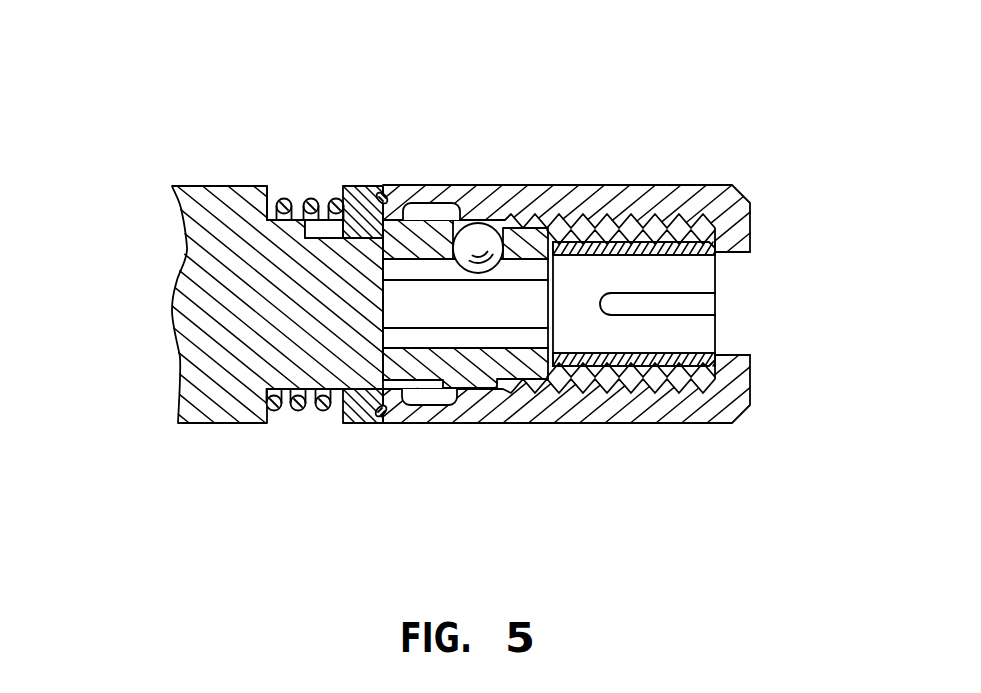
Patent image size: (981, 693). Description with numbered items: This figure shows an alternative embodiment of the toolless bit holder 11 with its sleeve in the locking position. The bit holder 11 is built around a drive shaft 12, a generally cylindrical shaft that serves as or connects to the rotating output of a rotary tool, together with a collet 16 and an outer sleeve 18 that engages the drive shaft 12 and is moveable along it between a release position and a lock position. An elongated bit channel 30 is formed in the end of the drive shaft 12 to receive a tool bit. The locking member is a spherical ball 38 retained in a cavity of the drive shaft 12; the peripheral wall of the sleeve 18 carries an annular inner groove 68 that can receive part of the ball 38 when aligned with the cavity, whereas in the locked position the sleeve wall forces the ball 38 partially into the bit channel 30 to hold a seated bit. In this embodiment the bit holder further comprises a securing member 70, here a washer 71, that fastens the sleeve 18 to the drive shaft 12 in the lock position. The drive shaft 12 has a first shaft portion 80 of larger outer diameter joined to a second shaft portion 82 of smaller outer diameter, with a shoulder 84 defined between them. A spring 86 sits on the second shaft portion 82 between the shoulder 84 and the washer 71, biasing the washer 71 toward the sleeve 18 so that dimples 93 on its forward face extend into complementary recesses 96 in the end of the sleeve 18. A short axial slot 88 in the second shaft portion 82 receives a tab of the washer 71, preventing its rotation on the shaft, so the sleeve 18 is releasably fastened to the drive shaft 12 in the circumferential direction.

The bit holder 11 is at (158, 136).
The drive shaft 12 is at (233, 253).
The collet 16 is at (717, 229).
The outer sleeve 18 is at (566, 285).
The bit channel 30 is at (730, 307).
The ball 38 is at (480, 238).
The annular inner groove 68 is at (434, 208).
The securing member 70 is at (368, 178).
The washer 71 is at (357, 412).
The first shaft portion 80 is at (207, 202).
The second shaft portion 82 is at (501, 372).
The shoulder 84 is at (286, 287).
The spring 86 is at (283, 200).
The axial slot 88 is at (326, 233).
The dimples 93 is at (373, 190).
The recesses 96 is at (410, 186).